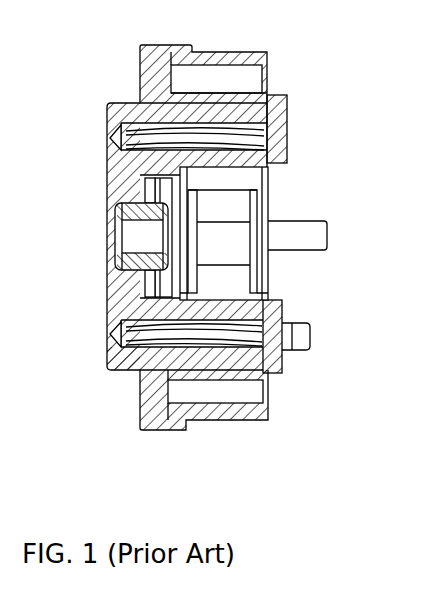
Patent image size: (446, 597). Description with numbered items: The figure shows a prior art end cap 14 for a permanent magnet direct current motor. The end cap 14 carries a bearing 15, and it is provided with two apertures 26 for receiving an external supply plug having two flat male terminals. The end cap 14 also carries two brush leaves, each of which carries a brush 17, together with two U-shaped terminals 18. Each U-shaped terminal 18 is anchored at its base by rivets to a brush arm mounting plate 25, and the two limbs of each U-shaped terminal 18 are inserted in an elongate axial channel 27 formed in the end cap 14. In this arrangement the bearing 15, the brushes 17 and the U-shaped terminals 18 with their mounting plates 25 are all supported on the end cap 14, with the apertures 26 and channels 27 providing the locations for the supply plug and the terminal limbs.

The end cap 14 is at (172, 44).
The bearing 15 is at (125, 271).
The brush 17 is at (237, 237).
The U-shaped terminal 18 is at (227, 117).
The brush arm mounting plate 25 is at (287, 116).
The aperture 26 is at (112, 138).
The elongate axial channel 27 is at (173, 120).